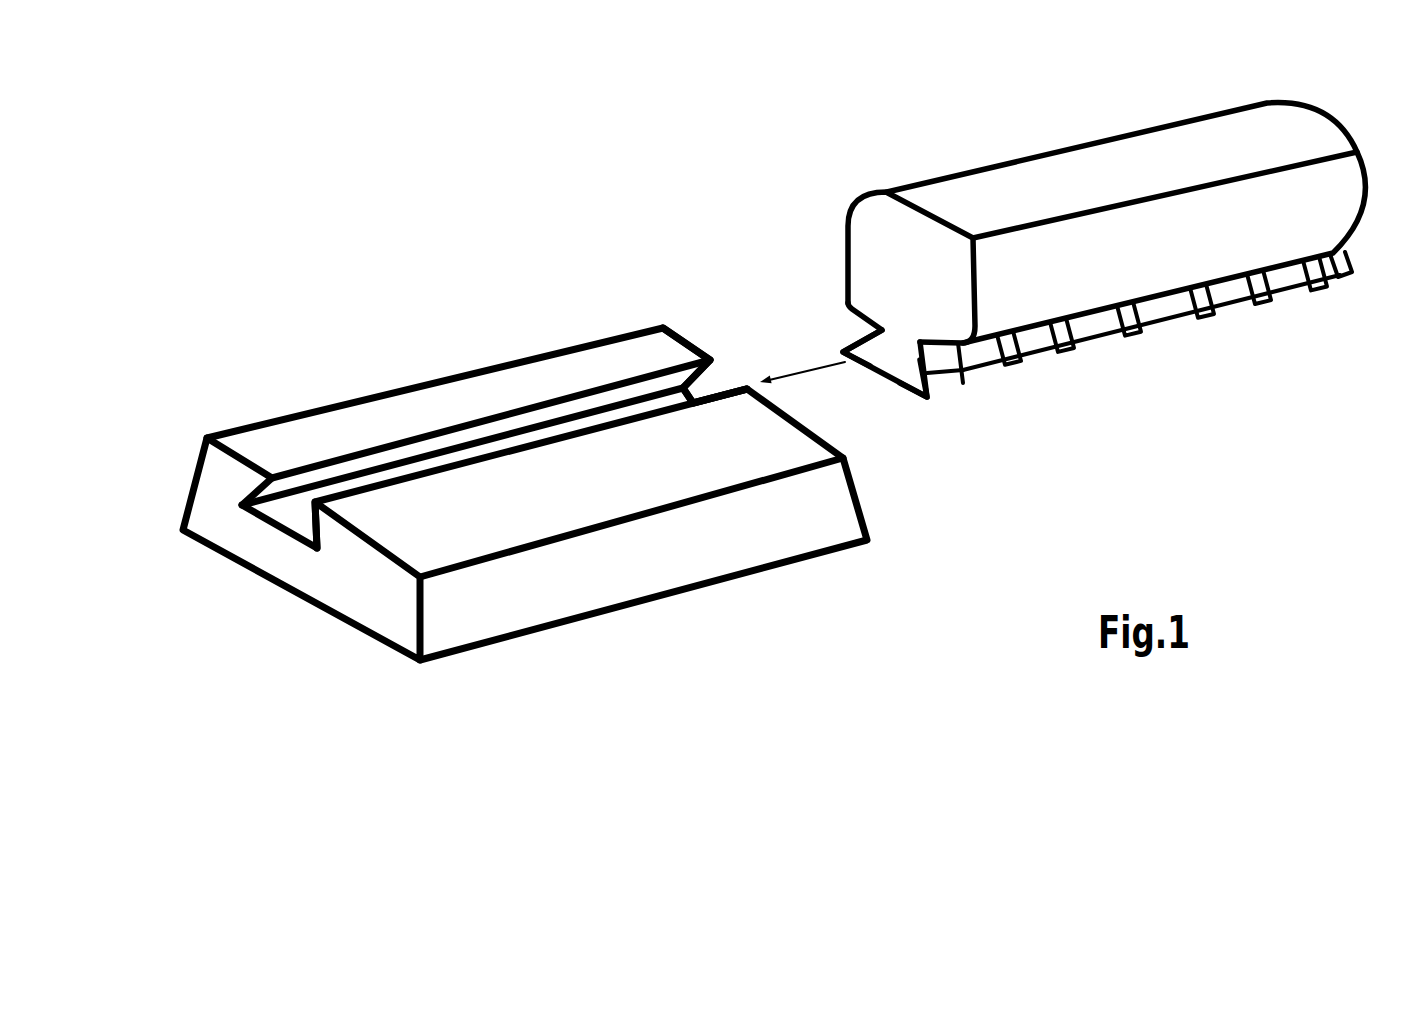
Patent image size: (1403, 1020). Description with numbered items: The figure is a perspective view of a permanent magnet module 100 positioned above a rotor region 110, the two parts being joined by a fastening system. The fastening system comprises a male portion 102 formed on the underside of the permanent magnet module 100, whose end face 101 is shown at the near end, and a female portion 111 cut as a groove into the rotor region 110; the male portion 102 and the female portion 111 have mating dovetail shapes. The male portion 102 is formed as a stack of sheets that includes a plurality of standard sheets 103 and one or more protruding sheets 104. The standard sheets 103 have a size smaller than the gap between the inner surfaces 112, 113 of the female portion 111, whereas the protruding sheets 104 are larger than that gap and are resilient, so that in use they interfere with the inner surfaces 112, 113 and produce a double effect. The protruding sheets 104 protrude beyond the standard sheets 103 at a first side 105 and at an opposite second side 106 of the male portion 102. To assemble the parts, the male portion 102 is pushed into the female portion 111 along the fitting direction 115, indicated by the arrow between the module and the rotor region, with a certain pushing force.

The permanent magnet module 100 is at (1066, 288).
The rail body end face 101 is at (863, 226).
The male portion 102 is at (899, 360).
The standard sheets 103 is at (1110, 333).
The protruding sheets 104 is at (963, 380).
The first side 105 is at (921, 405).
The second side 106 is at (843, 340).
The rotor region 110 is at (525, 479).
The female portion 111 is at (716, 391).
The inner surface 112 is at (527, 418).
The inner surface 113 is at (310, 522).
The fitting direction 115 is at (802, 376).